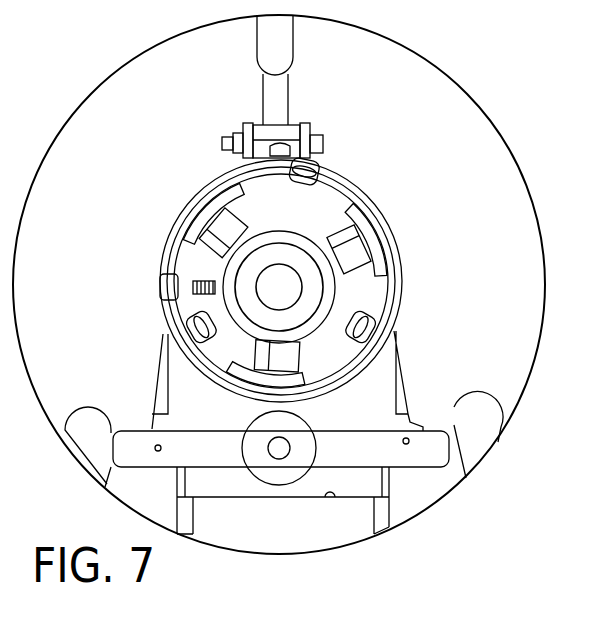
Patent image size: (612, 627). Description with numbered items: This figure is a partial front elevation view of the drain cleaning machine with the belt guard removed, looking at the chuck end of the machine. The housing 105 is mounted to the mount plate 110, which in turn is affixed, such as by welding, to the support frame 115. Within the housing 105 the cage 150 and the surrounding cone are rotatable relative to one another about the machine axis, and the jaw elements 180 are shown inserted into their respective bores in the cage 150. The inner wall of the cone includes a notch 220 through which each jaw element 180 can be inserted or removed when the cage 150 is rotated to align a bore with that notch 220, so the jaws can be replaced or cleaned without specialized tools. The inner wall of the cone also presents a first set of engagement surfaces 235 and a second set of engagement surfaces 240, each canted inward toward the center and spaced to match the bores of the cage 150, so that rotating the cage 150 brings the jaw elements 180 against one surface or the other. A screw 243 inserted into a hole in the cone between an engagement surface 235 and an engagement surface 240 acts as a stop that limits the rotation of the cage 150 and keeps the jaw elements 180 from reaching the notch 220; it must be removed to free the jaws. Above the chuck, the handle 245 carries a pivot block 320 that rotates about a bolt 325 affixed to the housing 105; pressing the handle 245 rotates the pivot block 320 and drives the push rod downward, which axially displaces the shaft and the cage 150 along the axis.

The housing 105 is at (384, 356).
The mount plate 110 is at (434, 431).
The support frame 115 is at (82, 431).
The cage 150 is at (222, 302).
The jaw element 180 is at (212, 230).
The notch 220 is at (340, 207).
The first set of engagement surfaces 235 is at (207, 227).
The second set of engagement surfaces 240 is at (292, 182).
The screw 243 is at (175, 277).
The handle 245 is at (282, 82).
The pivot block 320 is at (285, 133).
The bolt 325 is at (300, 148).